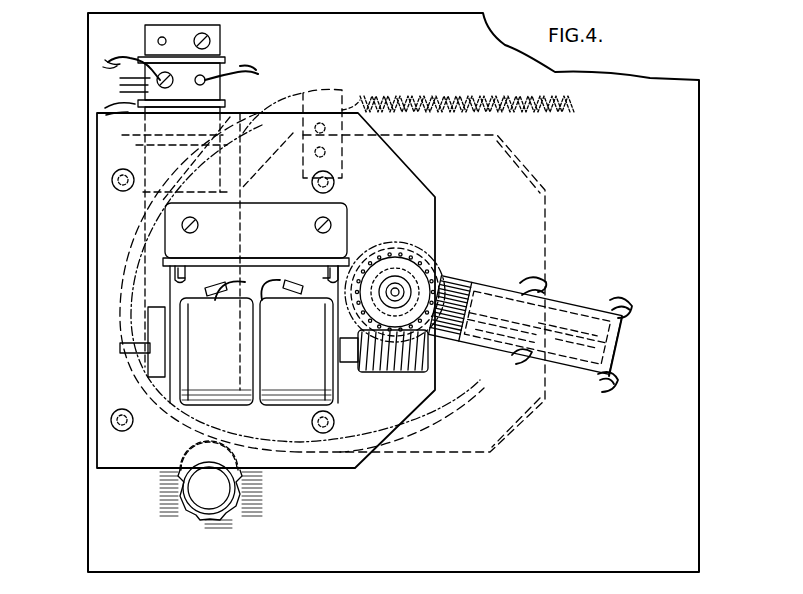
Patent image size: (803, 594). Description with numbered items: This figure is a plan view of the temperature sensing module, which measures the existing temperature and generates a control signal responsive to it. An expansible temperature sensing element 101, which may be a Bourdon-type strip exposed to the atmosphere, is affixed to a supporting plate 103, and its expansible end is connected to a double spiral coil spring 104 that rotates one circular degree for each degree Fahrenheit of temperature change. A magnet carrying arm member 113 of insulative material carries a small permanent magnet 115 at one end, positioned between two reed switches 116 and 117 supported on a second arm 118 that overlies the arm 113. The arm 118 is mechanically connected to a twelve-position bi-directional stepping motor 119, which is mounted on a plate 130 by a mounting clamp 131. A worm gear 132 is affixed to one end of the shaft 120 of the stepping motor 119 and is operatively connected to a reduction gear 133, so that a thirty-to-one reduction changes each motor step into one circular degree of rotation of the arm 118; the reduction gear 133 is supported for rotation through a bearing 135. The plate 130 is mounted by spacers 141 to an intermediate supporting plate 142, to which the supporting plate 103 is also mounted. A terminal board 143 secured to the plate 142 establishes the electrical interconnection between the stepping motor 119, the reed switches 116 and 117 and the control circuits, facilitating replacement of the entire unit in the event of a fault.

The expansible temperature sensing element 101 is at (432, 100).
The supporting plate 103 is at (453, 452).
The double spiral coil spring 104 is at (418, 254).
The magnet carrying arm member 113 is at (474, 337).
The permanent magnet 115 is at (624, 340).
The reed switch 116 is at (575, 380).
The reed switch 117 is at (574, 318).
The second arm 118 is at (545, 312).
The bi-directional stepping motor 119 is at (229, 335).
The shaft of stepping motor 120 is at (350, 365).
The plate 130 is at (128, 470).
The mounting clamp 131 is at (347, 220).
The worm gear 132 is at (400, 370).
The reduction gear 133 is at (394, 255).
The bearing 135 is at (383, 278).
The spacers 141 is at (115, 428).
The intermediate supporting plate 142 is at (696, 497).
The terminal board 143 is at (220, 41).